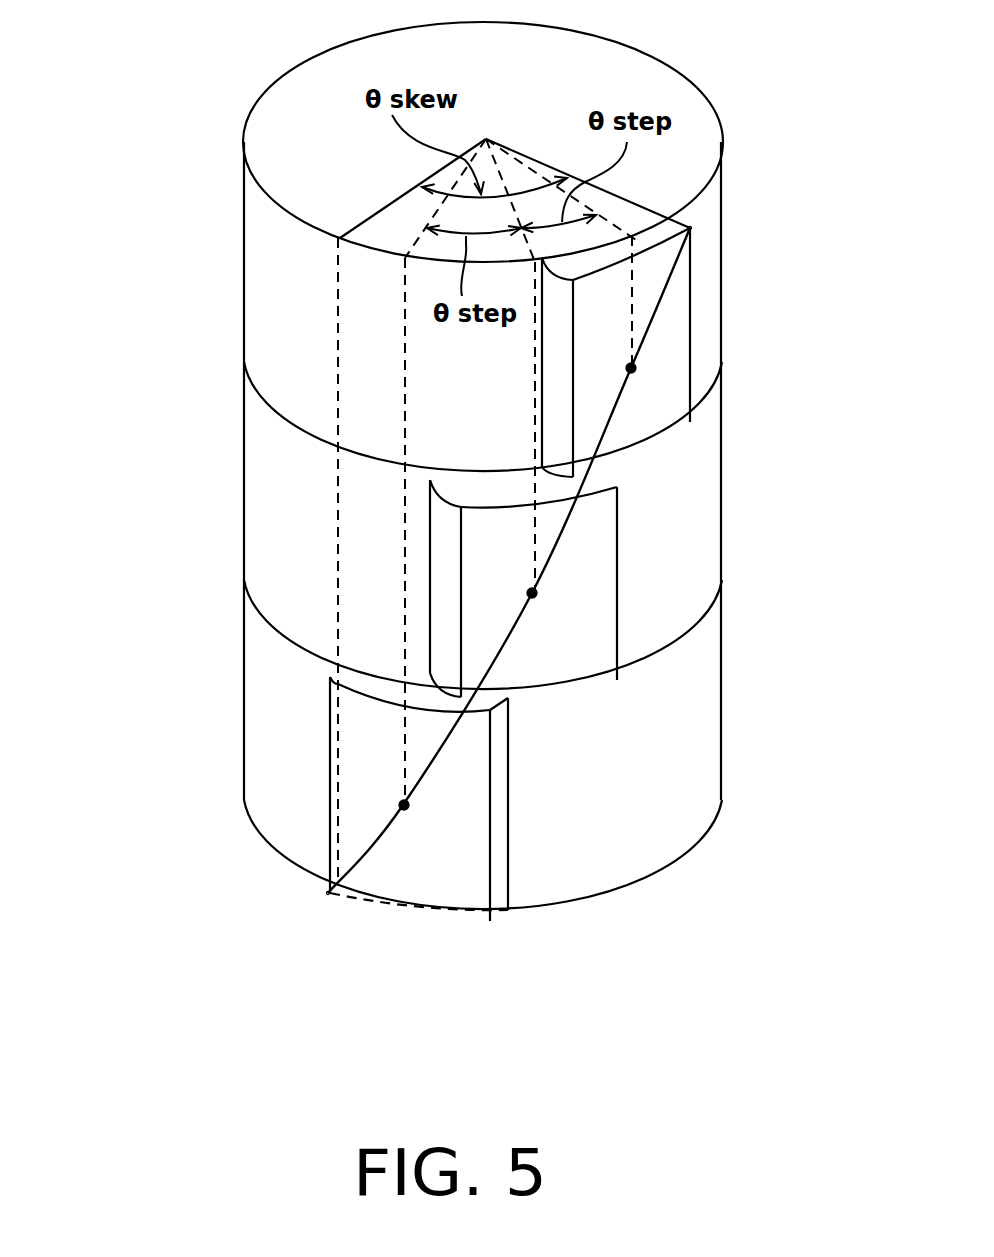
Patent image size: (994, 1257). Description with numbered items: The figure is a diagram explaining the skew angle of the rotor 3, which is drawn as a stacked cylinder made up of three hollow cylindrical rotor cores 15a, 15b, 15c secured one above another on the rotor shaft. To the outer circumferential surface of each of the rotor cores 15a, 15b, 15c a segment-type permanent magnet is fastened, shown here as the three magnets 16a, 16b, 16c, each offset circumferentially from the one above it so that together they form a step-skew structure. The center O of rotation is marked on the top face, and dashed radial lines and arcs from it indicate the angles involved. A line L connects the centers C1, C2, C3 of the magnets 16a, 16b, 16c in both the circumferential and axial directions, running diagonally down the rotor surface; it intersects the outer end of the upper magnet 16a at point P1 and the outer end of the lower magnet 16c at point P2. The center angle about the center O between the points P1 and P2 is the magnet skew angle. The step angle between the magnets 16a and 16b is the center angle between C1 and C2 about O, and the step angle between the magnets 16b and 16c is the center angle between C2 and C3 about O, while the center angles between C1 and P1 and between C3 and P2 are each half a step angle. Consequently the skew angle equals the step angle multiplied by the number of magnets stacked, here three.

The rotor 3 is at (730, 54).
The rotor core 15a is at (265, 315).
The rotor core 15b is at (265, 523).
The rotor core 15c is at (265, 757).
The magnet 16a is at (668, 360).
The magnet 16b is at (587, 623).
The magnet 16c is at (457, 855).
The line L is at (614, 414).
The point P1 is at (700, 222).
The point P2 is at (328, 893).
The center C1 is at (612, 356).
The center C2 is at (513, 589).
The center C3 is at (383, 795).
The center of rotation O is at (515, 173).